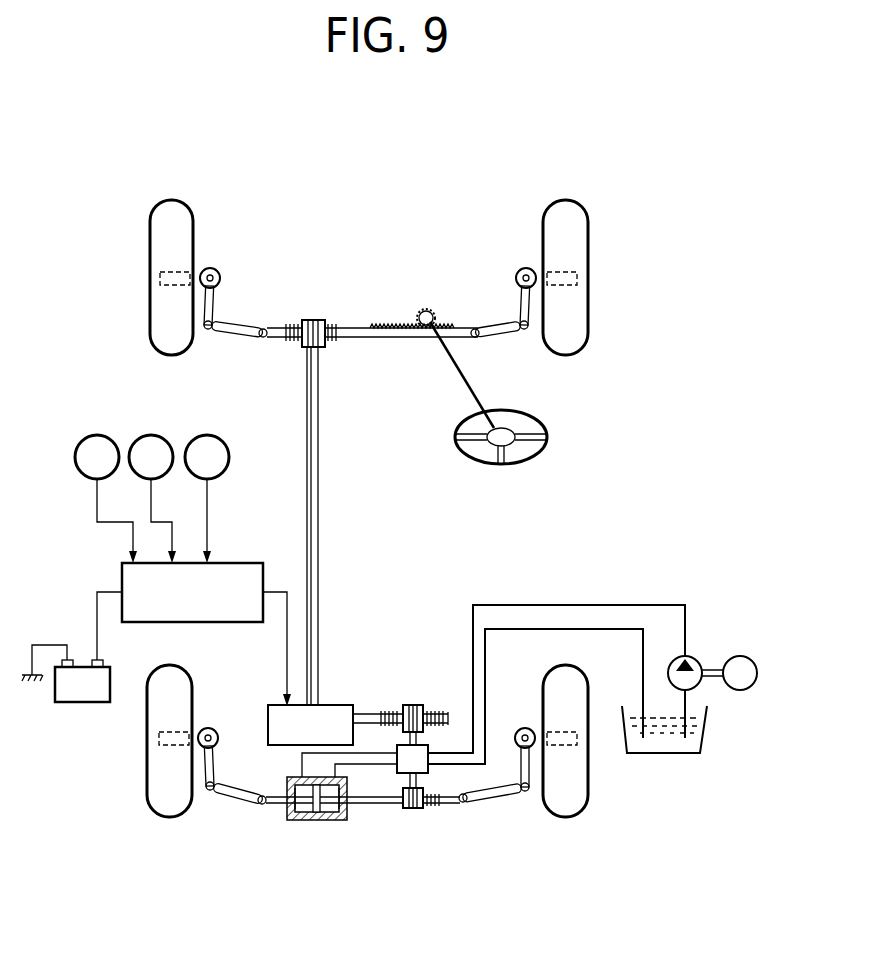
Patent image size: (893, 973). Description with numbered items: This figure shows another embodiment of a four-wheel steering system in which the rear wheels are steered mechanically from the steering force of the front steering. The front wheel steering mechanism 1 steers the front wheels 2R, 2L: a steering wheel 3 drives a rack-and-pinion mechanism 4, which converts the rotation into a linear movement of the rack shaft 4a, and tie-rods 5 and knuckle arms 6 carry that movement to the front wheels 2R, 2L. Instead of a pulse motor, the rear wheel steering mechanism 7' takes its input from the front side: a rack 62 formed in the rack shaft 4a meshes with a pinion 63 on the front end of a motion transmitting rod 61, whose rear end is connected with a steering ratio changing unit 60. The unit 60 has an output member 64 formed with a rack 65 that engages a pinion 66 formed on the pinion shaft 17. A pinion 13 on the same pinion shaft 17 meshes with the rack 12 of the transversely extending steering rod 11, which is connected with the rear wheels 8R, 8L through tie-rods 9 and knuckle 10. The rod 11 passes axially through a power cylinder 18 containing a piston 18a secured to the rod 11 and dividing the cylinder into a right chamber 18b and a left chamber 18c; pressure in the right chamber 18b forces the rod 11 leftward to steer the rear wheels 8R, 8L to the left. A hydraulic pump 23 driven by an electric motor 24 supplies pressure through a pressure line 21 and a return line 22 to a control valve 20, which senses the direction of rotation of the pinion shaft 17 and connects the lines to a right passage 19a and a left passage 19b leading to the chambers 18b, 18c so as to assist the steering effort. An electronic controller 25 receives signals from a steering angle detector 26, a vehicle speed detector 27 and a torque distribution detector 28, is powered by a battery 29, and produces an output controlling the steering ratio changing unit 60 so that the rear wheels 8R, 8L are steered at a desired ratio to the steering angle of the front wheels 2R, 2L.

The front wheel steering mechanism 1 is at (342, 284).
The left front wheel 2L is at (150, 247).
The right front wheel 2R is at (588, 247).
The steering wheel 3 is at (537, 420).
The rack-and-pinion mechanism 4 is at (435, 309).
The rack shaft 4a is at (356, 338).
The tie-rods 5 is at (236, 340).
The knuckle arms 6 is at (214, 298).
The rear wheel steering mechanism 7' is at (435, 570).
The left rear wheel 8L is at (147, 805).
The right rear wheel 8R is at (588, 805).
The tie-rods 9 is at (231, 796).
The knuckle 10 is at (214, 762).
The steering rod 11 is at (370, 806).
The rack 12 is at (445, 806).
The pinion 13 is at (413, 809).
The pinion shaft 17 is at (419, 783).
The power cylinder 18 is at (301, 831).
The piston 18a is at (318, 821).
The right chamber 18b is at (288, 814).
The left chamber 18c is at (342, 821).
The right passage 19a is at (341, 753).
The left passage 19b is at (348, 766).
The control valve 20 is at (421, 752).
The pressure line 21 is at (562, 604).
The return line 22 is at (618, 630).
The hydraulic pump 23 is at (701, 691).
The electric motor 24 is at (738, 656).
The electronic controller 25 is at (122, 577).
The steering angle detector 26 is at (91, 435).
The vehicle speed detector 27 is at (148, 435).
The torque distribution detector 28 is at (208, 435).
The battery 29 is at (80, 703).
The steering ratio changing unit 60 is at (268, 713).
The motion transmitting rod 61 is at (319, 505).
The rack 62 is at (331, 322).
The pinion 63 is at (302, 341).
The output member 64 is at (371, 712).
The rack 65 is at (438, 712).
The pinion 66 is at (412, 705).